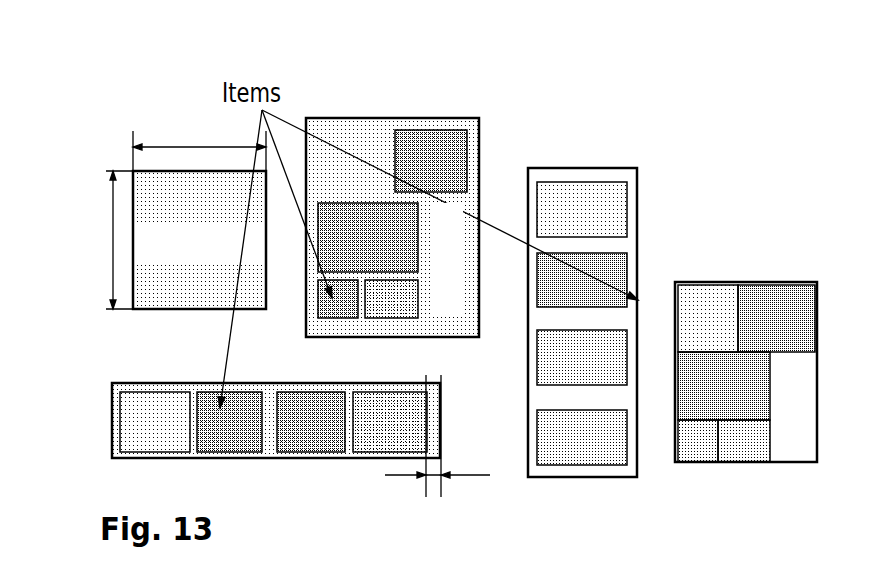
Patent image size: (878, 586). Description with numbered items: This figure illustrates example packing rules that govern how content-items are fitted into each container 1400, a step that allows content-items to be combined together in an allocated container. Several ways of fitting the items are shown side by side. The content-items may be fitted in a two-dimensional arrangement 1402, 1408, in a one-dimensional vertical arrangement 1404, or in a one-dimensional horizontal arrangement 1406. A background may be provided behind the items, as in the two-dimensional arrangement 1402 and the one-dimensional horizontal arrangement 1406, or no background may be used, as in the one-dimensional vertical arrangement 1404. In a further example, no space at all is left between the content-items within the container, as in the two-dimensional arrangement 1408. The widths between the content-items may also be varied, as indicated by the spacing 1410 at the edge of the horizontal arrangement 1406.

The container 1400 is at (132, 223).
The 2D arrangement with background 1402 is at (477, 117).
The 1D vertical arrangement 1404 is at (637, 190).
The 1D horizontal arrangement 1406 is at (112, 420).
The 2D arrangement with no space between content-items 1408 is at (738, 463).
The width between content-items 1410 is at (433, 522).